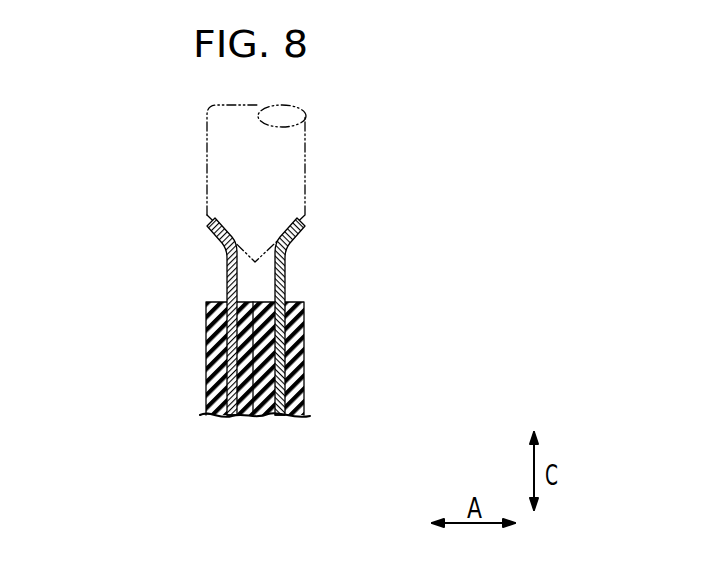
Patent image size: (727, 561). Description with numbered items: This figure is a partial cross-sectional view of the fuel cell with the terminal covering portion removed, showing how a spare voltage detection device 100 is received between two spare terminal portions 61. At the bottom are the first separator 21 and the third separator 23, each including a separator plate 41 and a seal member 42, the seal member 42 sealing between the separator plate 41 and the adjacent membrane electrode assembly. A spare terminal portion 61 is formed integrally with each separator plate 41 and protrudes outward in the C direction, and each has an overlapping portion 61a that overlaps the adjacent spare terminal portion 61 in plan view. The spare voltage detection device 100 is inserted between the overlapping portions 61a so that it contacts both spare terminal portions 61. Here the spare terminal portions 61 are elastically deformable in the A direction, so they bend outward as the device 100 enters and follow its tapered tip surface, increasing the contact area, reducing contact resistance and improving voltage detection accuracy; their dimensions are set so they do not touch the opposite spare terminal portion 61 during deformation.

The spare voltage detection device 100 is at (305, 150).
The overlapping portion 61a is at (208, 226).
The spare terminal portion 61 is at (256, 316).
The seal member 42 is at (206, 324).
The separator plate 41 is at (230, 382).
The third separator 23 is at (230, 430).
The first separator 21 is at (278, 430).